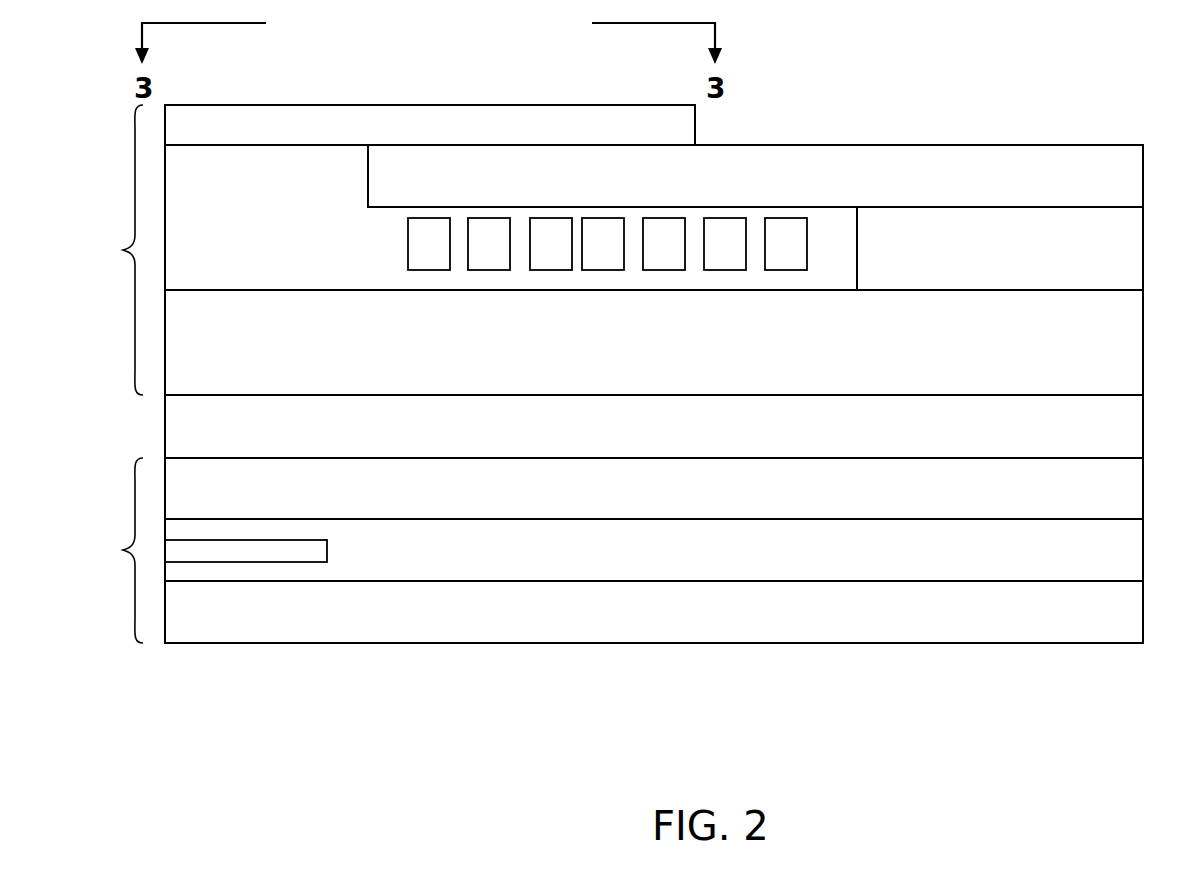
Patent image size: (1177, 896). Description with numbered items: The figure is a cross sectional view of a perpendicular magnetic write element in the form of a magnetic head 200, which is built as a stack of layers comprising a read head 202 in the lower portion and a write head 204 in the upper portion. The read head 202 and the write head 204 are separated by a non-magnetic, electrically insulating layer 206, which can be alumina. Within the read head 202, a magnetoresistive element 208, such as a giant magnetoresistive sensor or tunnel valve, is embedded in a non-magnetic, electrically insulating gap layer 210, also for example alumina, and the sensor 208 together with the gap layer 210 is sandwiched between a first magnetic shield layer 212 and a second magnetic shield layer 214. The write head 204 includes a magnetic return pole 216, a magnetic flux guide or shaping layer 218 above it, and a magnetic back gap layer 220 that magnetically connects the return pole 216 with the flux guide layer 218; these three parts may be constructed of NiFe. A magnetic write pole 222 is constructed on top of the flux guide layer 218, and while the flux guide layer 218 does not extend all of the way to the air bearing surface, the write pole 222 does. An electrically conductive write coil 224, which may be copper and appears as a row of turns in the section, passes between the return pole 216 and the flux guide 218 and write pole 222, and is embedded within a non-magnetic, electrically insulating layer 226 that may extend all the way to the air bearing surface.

The magnetic head 200 is at (966, 116).
The read head 202 is at (127, 484).
The write head 204 is at (127, 144).
The non-magnetic, electrically insulating layer 206 is at (730, 432).
The magnetoresistive element 208 is at (327, 551).
The gap layer 210 is at (732, 556).
The first magnetic shield layer 212 is at (732, 618).
The second magnetic shield layer 214 is at (732, 494).
The magnetic return pole 216 is at (736, 352).
The flux guide or shaping layer 218 is at (778, 178).
The magnetic back gap layer 220 is at (1042, 248).
The magnetic write pole 222 is at (410, 126).
The write coil 224 is at (595, 290).
The non-magnetic, electrically insulating layer 226 is at (348, 228).